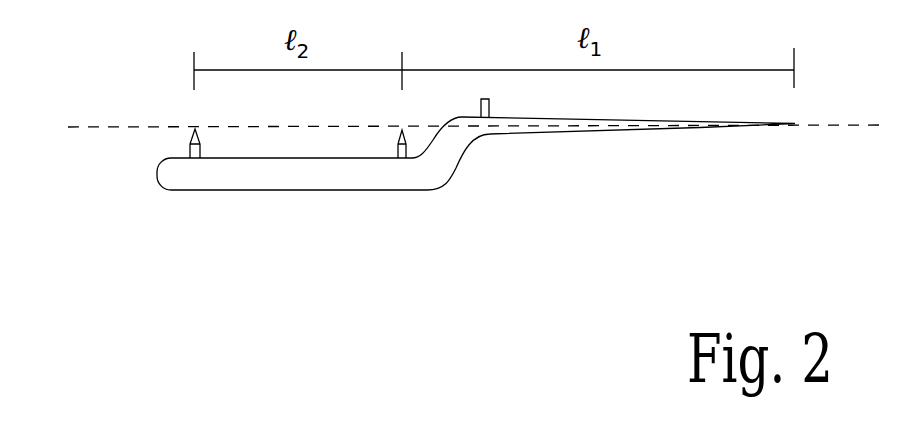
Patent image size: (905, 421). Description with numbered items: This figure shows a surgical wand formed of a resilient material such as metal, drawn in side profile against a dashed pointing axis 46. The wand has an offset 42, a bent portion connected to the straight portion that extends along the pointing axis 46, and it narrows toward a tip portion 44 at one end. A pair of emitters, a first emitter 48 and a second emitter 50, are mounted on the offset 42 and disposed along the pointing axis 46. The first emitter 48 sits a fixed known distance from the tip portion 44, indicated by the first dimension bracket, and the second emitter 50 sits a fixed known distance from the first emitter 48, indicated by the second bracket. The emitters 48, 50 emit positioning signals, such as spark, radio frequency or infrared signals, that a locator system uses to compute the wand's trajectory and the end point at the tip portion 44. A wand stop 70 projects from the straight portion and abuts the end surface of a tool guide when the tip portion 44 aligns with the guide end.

The offset 42 is at (277, 182).
The tip portion 44 is at (795, 123).
The pointing axis 46 is at (458, 129).
The first emitter 48 is at (402, 127).
The second emitter 50 is at (194, 127).
The wand stop 70 is at (490, 100).